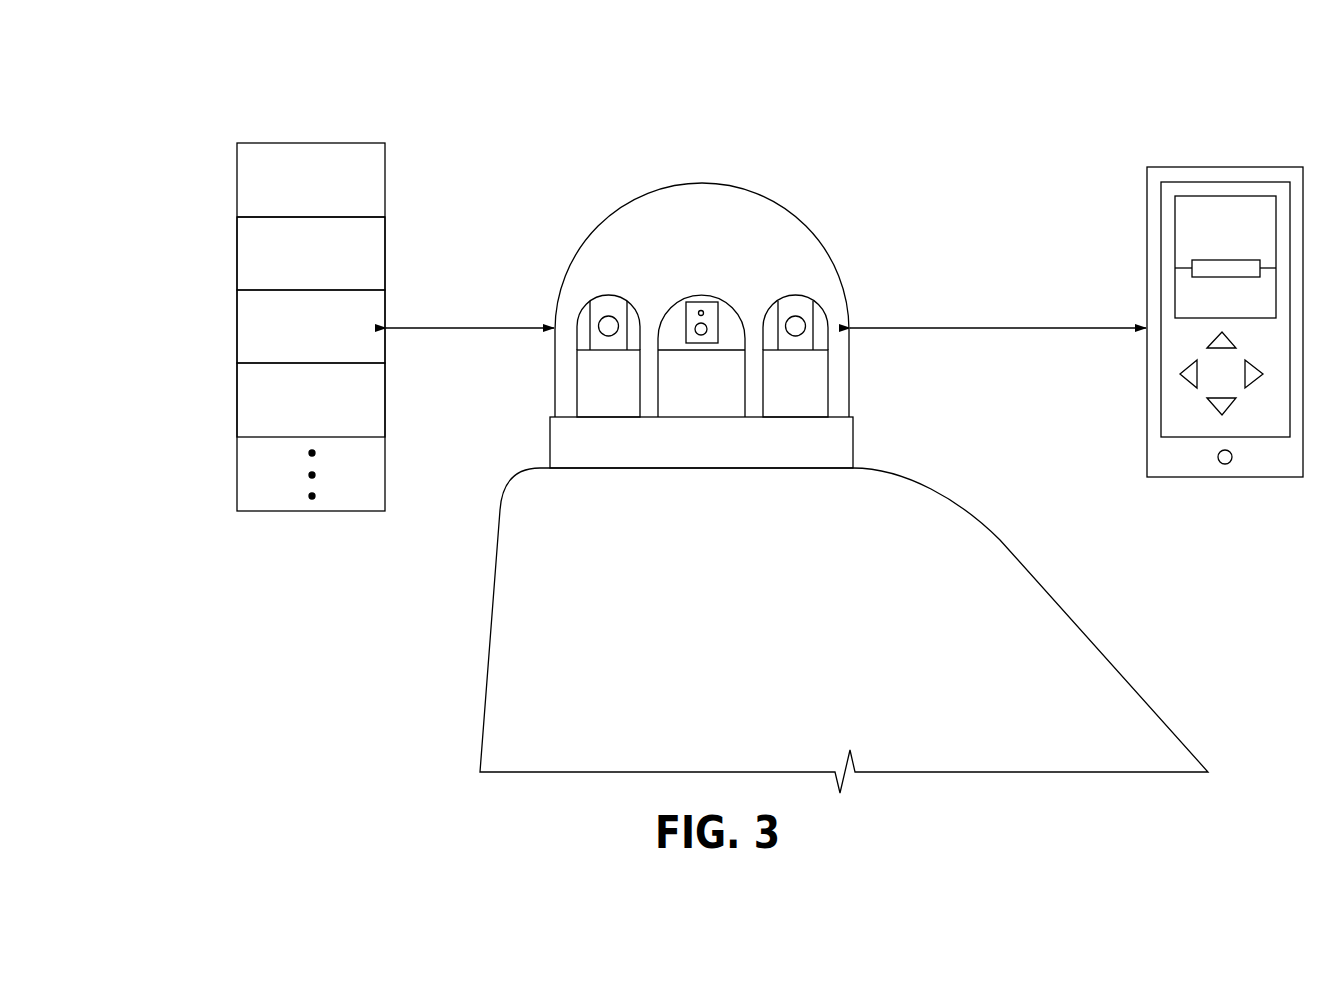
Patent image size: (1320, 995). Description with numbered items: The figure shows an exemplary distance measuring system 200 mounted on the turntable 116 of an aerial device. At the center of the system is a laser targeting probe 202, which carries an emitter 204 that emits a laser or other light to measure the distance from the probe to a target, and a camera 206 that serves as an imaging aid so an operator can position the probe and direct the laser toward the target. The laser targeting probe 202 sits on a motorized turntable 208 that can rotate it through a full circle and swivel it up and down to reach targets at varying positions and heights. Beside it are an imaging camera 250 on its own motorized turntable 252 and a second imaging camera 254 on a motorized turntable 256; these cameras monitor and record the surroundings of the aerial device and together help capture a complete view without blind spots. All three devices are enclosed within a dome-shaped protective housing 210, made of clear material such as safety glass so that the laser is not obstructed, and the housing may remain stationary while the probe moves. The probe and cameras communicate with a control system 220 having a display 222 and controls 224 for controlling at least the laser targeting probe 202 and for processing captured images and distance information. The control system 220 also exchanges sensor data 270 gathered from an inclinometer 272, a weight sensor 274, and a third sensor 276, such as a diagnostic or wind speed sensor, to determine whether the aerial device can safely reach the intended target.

The distance measuring system 200 is at (191, 72).
The sensor data 270 is at (379, 121).
The inclinometer 272 is at (237, 253).
The weight sensor 274 is at (237, 327).
The third sensor 276 is at (237, 400).
The turntable 116 is at (512, 625).
The motorized turntable 208 is at (846, 446).
The protective housing 210 is at (684, 182).
The second imaging camera 254 is at (592, 288).
The motorized turntable 256 is at (580, 355).
The laser targeting probe 202 is at (721, 370).
The emitter 204 is at (699, 308).
The camera 206 is at (705, 322).
The imaging camera 250 is at (809, 288).
The motorized turntable 252 is at (830, 358).
The control system 220 is at (1137, 113).
The display 222 is at (1235, 218).
The controls 224 is at (1211, 378).